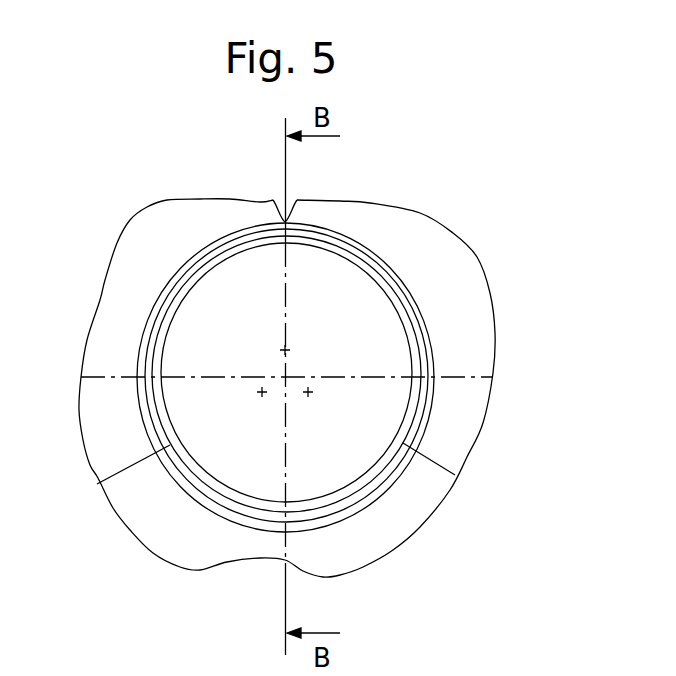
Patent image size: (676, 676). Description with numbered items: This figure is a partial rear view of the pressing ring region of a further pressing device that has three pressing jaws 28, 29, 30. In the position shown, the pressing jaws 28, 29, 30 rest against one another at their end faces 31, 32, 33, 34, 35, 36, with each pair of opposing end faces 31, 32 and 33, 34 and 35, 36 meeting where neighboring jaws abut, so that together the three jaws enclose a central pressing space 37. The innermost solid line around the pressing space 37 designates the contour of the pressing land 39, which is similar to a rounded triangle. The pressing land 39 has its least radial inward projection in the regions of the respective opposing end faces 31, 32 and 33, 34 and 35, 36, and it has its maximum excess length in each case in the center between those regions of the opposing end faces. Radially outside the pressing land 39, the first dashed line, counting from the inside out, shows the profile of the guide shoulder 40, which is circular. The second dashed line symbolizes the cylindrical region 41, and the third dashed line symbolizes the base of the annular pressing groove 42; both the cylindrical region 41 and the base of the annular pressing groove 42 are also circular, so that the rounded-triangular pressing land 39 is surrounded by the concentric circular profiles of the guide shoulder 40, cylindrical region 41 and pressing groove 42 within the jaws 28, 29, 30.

The pressing jaw 28 is at (167, 222).
The pressing jaw 29 is at (455, 257).
The pressing jaw 30 is at (387, 538).
The end face 31 is at (283, 219).
The end face 32 is at (291, 222).
The end face 33 is at (108, 512).
The end face 34 is at (108, 512).
The end face 35 is at (465, 508).
The end face 36 is at (465, 508).
The pressing space 37 is at (347, 282).
The pressing land 39 is at (227, 266).
The guide shoulder 40 is at (193, 277).
The cylindrical region 41 is at (172, 287).
The annular pressing groove 42 is at (150, 313).